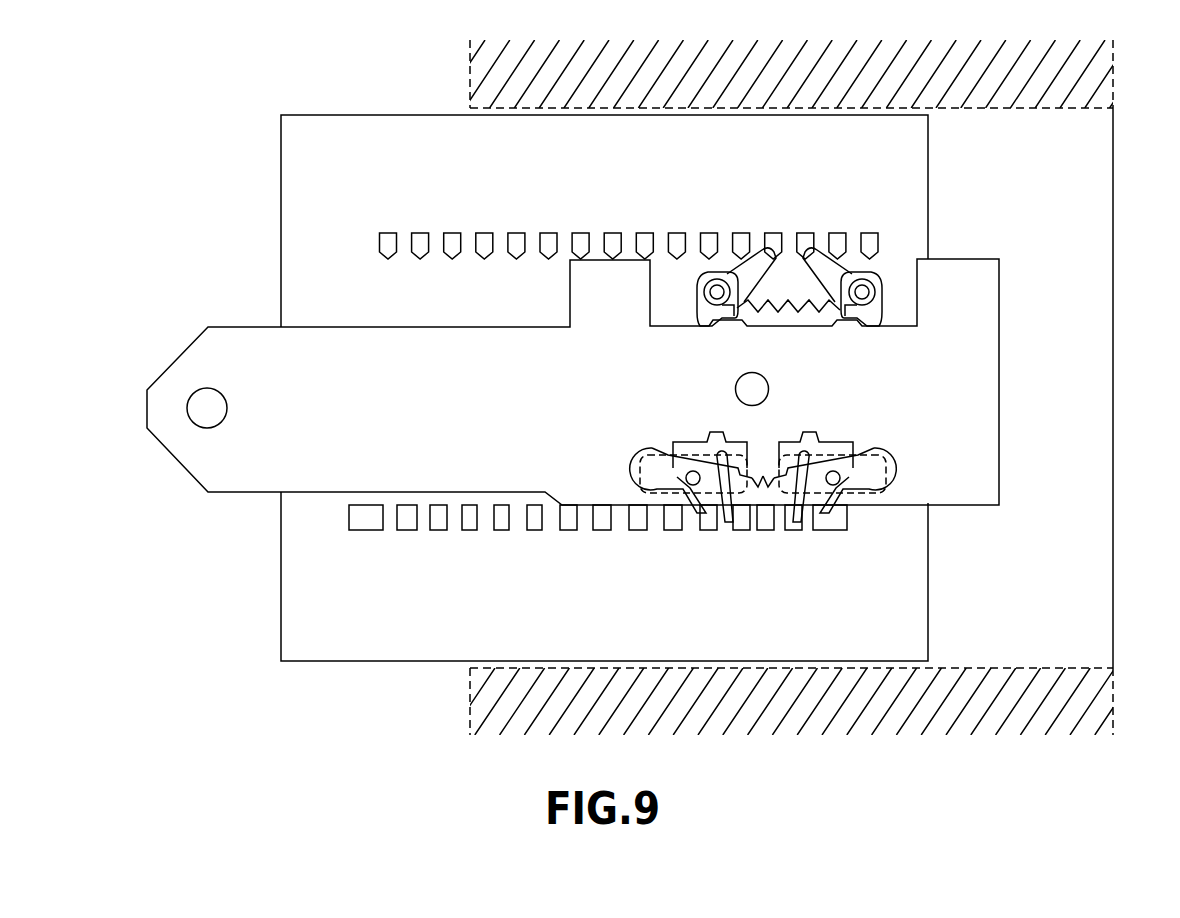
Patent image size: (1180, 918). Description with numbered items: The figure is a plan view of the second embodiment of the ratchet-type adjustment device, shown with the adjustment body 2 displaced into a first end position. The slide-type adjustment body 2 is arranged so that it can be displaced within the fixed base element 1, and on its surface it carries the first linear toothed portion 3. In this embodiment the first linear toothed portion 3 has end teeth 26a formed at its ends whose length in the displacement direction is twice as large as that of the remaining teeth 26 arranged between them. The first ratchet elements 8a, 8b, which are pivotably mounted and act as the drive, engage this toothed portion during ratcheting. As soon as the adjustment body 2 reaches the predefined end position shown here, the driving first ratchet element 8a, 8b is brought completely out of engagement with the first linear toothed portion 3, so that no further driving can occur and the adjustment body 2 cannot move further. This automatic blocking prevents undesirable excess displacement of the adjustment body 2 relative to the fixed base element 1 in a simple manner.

The base element 1 is at (1095, 700).
The adjustment body 2 is at (983, 395).
The first linear toothed portion 3 is at (627, 560).
The first ratchet element 8a is at (717, 478).
The first ratchet element 8b is at (802, 478).
The remaining teeth 26 is at (568, 523).
The end teeth 26a is at (383, 530).